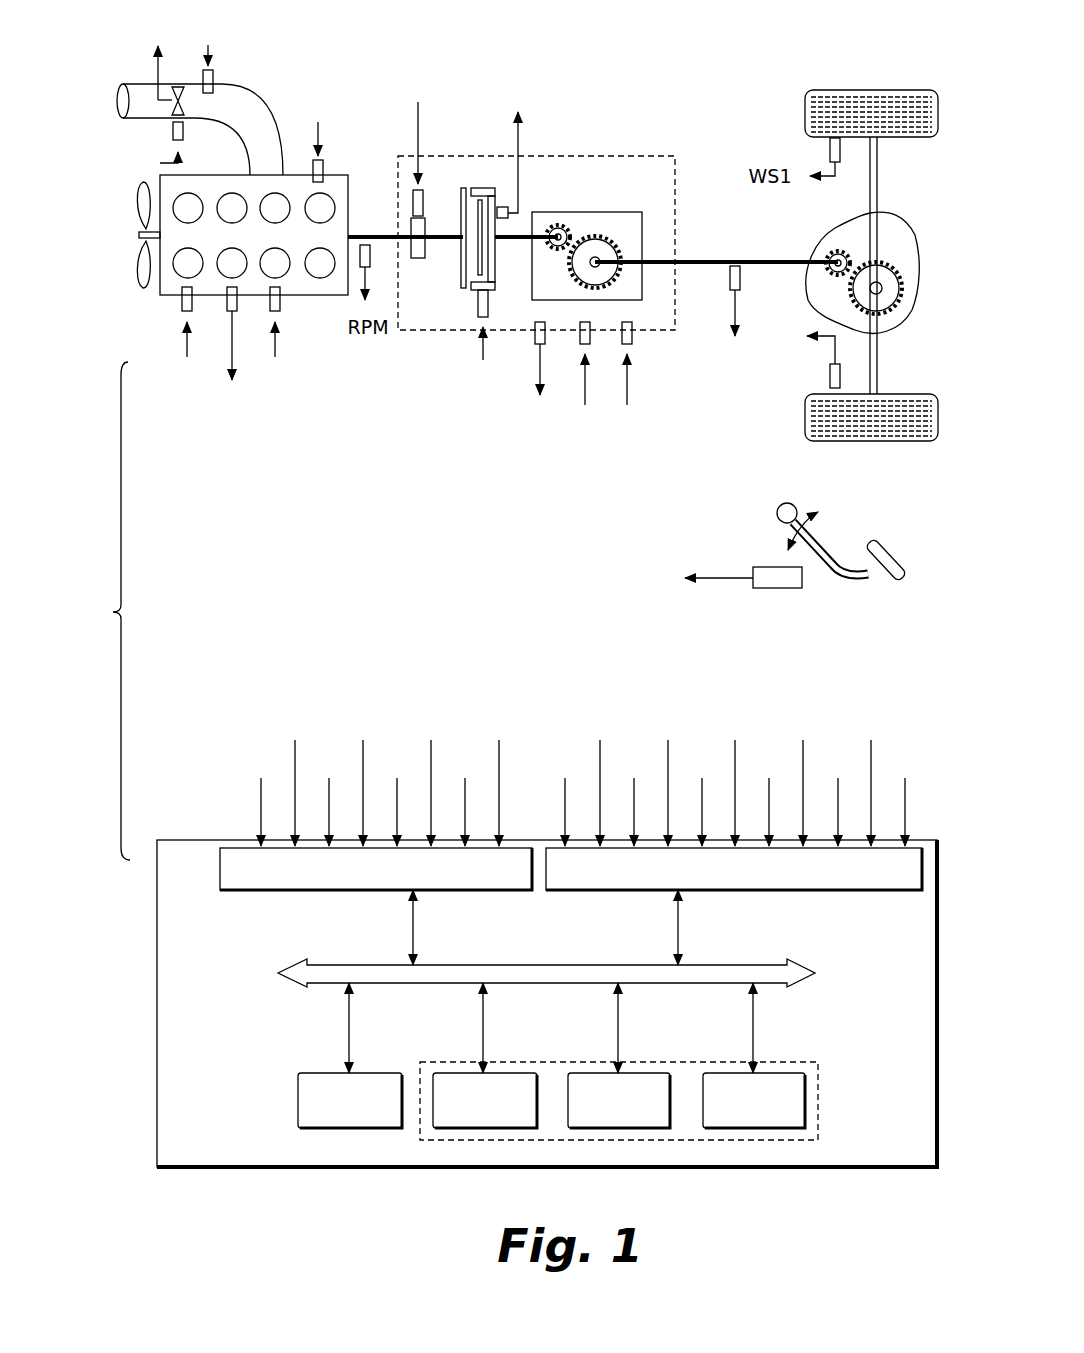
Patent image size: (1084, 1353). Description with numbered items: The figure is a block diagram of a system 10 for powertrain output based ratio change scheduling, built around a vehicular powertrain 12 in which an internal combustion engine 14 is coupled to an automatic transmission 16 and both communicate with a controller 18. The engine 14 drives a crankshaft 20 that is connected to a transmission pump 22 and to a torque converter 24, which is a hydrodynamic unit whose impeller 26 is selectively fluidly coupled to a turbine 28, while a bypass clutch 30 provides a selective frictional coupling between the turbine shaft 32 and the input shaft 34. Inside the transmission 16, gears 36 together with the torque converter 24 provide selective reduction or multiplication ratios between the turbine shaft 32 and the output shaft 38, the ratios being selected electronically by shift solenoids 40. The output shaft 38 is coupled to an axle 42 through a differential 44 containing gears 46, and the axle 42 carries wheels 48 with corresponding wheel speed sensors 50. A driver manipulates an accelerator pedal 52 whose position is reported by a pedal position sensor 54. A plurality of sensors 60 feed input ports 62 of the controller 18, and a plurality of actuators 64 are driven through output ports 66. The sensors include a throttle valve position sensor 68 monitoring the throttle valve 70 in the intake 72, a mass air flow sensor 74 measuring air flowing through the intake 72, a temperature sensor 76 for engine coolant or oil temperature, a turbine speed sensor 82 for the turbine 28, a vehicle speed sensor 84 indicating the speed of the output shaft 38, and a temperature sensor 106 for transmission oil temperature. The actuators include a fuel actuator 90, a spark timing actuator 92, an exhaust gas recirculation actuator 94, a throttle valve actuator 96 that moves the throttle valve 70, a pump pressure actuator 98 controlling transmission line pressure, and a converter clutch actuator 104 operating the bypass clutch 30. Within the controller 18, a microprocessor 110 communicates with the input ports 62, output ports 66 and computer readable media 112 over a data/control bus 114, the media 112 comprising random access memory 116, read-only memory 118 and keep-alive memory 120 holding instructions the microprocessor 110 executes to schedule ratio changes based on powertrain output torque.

The system 10 is at (107, 611).
The vehicular powertrain 12 is at (470, 428).
The internal combustion engine 14 is at (326, 297).
The automatic transmission 16 is at (675, 173).
The controller 18 is at (850, 1168).
The crankshaft 20 is at (369, 228).
The transmission pump 22 is at (418, 262).
The torque converter 24 is at (458, 304).
The impeller 26 is at (460, 205).
The turbine 28 is at (496, 290).
The bypass clutch 30 is at (482, 192).
The turbine shaft 32 is at (520, 245).
The input shaft 34 is at (437, 246).
The gears 36 is at (578, 208).
The output shaft 38 is at (705, 260).
The shift solenoids 40 is at (605, 442).
The axle 42 is at (880, 182).
The differential 44 is at (912, 256).
The gears 46 is at (907, 303).
The wheels 48 is at (882, 442).
The wheel speed sensors 50 is at (818, 390).
The accelerator pedal 52 is at (893, 553).
The pedal position sensor 54 is at (777, 590).
The sensors 60 is at (902, 705).
The input ports 62 is at (825, 892).
The actuators 64 is at (232, 705).
The output ports 66 is at (280, 892).
The throttle valve position sensor 68 is at (155, 68).
The throttle valve 70 is at (188, 116).
The intake 72 is at (258, 108).
The mass air flow sensor 74 is at (215, 78).
The temperature sensor 76 is at (234, 358).
The turbine speed sensor 82 is at (501, 205).
The vehicle speed sensor 84 is at (730, 278).
The fuel actuator 90 is at (185, 350).
The spark actuator 92 is at (277, 345).
The exhaust gas recirculation actuator 94 is at (324, 165).
The throttle valve actuator 96 is at (172, 130).
The pump pressure actuator 98 is at (428, 200).
The converter clutch actuator 104 is at (472, 300).
The temperature sensor 106 is at (543, 385).
The microprocessor 110 is at (322, 1073).
The computer readable media 112 is at (818, 1100).
The data/control bus 114 is at (560, 962).
The random access memory 116 is at (783, 1073).
The read-only memory 118 is at (645, 1073).
The keep-alive memory 120 is at (460, 1073).